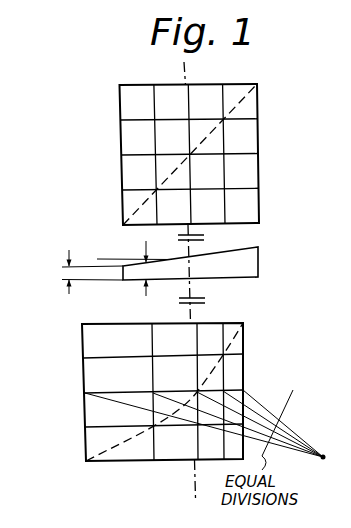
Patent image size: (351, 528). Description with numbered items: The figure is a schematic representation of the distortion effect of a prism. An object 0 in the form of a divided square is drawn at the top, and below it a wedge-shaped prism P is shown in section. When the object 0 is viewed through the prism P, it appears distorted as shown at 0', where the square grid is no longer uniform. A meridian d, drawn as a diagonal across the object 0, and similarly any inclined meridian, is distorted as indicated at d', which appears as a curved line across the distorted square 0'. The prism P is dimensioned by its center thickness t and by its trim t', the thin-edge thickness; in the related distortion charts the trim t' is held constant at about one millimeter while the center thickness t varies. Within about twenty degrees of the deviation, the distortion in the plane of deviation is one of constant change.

The object 0 is at (204, 154).
The meridian d is at (205, 153).
The prism P is at (258, 259).
The center thickness t is at (126, 260).
The trim t' is at (69, 272).
The distorted object 0' is at (180, 392).
The distorted meridian d' is at (142, 392).